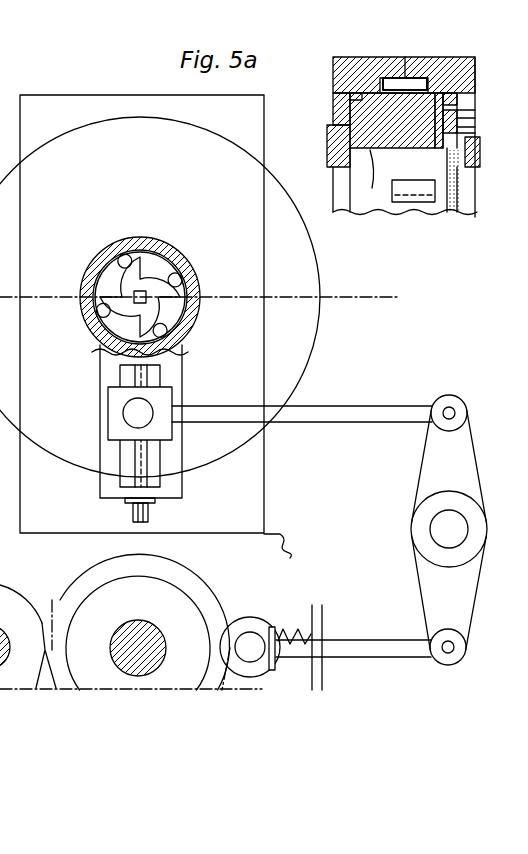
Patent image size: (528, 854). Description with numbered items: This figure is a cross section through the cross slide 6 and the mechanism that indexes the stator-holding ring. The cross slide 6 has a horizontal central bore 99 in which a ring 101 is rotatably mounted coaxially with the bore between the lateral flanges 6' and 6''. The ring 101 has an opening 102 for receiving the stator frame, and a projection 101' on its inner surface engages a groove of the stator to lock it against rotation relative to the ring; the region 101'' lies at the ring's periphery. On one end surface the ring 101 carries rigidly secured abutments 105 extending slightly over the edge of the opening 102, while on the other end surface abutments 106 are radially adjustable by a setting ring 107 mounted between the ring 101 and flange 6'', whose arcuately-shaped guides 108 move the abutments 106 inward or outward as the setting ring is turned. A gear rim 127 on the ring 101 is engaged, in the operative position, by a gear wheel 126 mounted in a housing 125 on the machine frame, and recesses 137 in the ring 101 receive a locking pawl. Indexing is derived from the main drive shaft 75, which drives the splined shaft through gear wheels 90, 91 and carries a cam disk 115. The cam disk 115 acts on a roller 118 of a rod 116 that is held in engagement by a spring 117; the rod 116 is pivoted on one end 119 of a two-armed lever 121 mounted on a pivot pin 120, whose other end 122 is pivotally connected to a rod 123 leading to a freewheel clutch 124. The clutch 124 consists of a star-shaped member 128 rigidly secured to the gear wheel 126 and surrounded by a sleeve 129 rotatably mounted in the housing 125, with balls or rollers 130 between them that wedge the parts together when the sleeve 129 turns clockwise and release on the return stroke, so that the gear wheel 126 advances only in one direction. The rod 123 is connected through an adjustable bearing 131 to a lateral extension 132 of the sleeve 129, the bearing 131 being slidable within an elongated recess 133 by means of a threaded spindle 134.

The cross slide 6 is at (384, 68).
The gear rim 127 is at (413, 83).
The horizontal central bore 99 is at (450, 90).
The recesses 137 is at (338, 98).
The lateral flange 6' is at (331, 102).
The ring 101 is at (358, 120).
The abutments 105 is at (335, 157).
The opening 102 is at (405, 181).
The projection 101' is at (415, 214).
The housing rib 101'' is at (480, 114).
The lateral flange 6'' is at (472, 102).
The setting ring 107 is at (477, 115).
The arcuately-shaped guides 108 is at (477, 127).
The adjustable abutments 106 is at (472, 160).
The freewheel clutch 124 is at (160, 268).
The balls or rollers 130 is at (93, 298).
The star-shaped member 128 is at (178, 297).
The sleeve 129 is at (178, 353).
The housing 125 is at (250, 365).
The gear wheel 126 is at (318, 325).
The rod 123 is at (360, 413).
The other end of lever 122 is at (449, 413).
The adjustable bearing 131 is at (117, 400).
The threaded spindle 134 is at (145, 455).
The lateral extension 132 is at (108, 488).
The elongated recess 133 is at (155, 483).
The pivot pin 120 is at (442, 540).
The two-armed lever 121 is at (433, 583).
The rod 116 is at (387, 647).
The one end of lever 119 is at (447, 650).
The gear wheel 90 is at (123, 580).
The gear wheel 91 is at (10, 610).
The main drive shaft 75 is at (152, 624).
The cam disk 115 is at (206, 627).
The roller 118 is at (258, 628).
The spring 117 is at (298, 650).